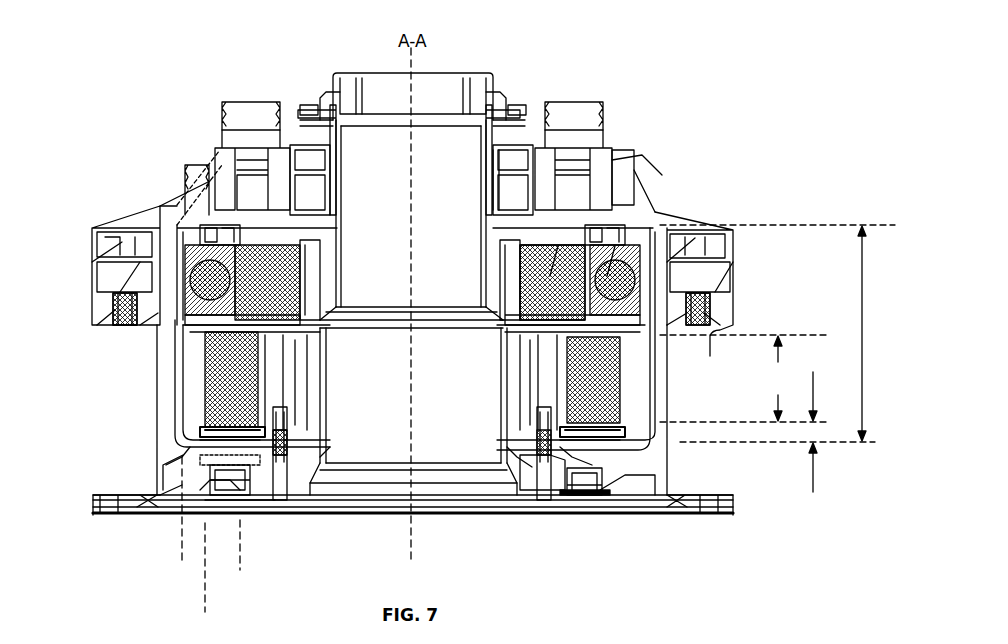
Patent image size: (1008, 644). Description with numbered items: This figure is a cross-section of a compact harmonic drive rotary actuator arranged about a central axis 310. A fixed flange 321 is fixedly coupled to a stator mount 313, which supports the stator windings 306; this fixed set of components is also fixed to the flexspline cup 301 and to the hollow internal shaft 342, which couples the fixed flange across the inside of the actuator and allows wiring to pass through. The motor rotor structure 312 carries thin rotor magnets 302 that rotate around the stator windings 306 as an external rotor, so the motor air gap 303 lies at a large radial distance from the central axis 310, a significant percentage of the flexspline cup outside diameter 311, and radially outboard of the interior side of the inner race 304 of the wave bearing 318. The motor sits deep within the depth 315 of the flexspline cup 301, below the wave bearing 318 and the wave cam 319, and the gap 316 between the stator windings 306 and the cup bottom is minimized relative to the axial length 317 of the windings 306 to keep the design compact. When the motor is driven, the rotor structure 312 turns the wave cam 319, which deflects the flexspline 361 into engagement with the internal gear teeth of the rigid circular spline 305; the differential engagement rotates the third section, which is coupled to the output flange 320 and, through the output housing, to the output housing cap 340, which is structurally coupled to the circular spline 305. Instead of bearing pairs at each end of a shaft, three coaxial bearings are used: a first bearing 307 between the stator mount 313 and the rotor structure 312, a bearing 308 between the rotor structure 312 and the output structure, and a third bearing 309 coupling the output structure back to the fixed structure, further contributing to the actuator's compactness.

The flexspline cup 301 is at (650, 370).
The rotor magnets 302 is at (180, 380).
The motor air gap 303 is at (204, 585).
The inner race 304 is at (240, 531).
The rigid circular spline 305 is at (170, 240).
The stator windings 306 is at (586, 398).
The first bearing 307 is at (519, 328).
The bearing 308 is at (496, 228).
The third bearing 309 is at (512, 170).
The central axis 310 is at (414, 529).
The flexspline cup outside diameter 311 is at (180, 518).
The motor rotor structure 312 is at (188, 324).
The stator mount 313 is at (548, 424).
The depth of the flexspline cup 315 is at (777, 333).
The gap 316 is at (810, 482).
The depth of the windings 317 is at (745, 378).
The wave bearing 318 is at (570, 263).
The wave cam 319 is at (565, 246).
The output flange 320 is at (136, 491).
The fixed flange 321 is at (566, 513).
The output housing cap 340 is at (577, 247).
The internal shaft 342 is at (322, 350).
The flexspline 361 is at (700, 286).